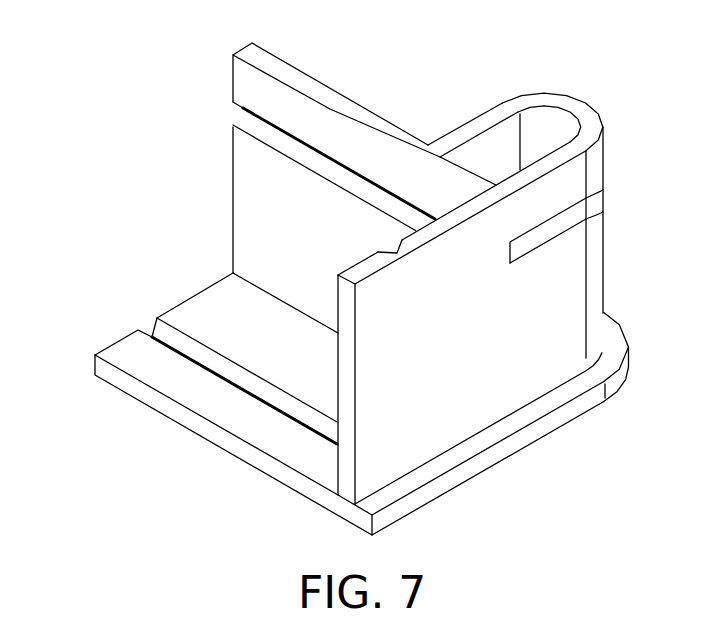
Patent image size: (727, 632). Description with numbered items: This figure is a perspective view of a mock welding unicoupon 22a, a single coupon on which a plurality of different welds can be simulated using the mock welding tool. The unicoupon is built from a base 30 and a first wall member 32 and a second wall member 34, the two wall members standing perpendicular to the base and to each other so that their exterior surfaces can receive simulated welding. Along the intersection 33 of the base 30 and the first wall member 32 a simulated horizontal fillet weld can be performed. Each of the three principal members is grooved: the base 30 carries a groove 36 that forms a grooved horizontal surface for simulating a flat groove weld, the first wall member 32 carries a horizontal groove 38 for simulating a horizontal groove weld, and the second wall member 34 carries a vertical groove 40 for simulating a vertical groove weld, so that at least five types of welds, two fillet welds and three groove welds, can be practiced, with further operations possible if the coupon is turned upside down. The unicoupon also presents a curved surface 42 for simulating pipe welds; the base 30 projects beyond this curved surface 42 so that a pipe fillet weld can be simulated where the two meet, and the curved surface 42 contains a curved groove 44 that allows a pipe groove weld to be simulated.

The mock welding unicoupon 22a is at (137, 109).
The base 30 is at (499, 462).
The first wall member 32 is at (290, 65).
The intersection of the base and the first wall member 33 is at (273, 293).
The second wall member 34 is at (362, 262).
The groove 36 is at (152, 333).
The horizontal groove 38 is at (245, 121).
The vertical groove 40 is at (398, 247).
The curved surface 42 is at (588, 104).
The curved groove 44 is at (597, 197).